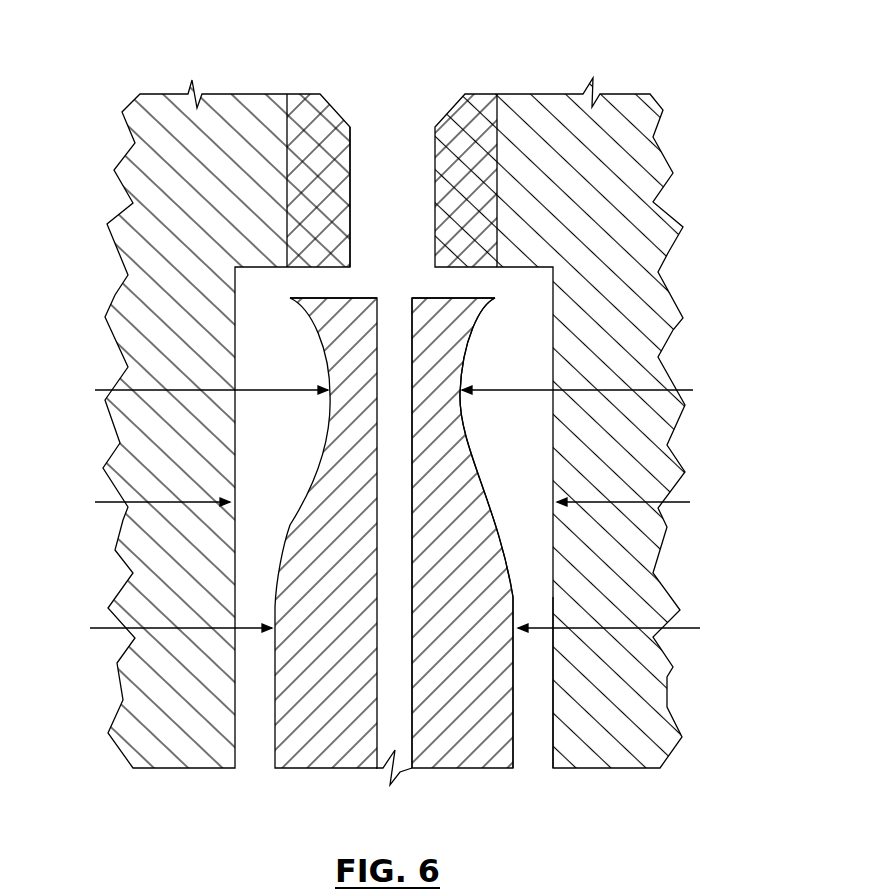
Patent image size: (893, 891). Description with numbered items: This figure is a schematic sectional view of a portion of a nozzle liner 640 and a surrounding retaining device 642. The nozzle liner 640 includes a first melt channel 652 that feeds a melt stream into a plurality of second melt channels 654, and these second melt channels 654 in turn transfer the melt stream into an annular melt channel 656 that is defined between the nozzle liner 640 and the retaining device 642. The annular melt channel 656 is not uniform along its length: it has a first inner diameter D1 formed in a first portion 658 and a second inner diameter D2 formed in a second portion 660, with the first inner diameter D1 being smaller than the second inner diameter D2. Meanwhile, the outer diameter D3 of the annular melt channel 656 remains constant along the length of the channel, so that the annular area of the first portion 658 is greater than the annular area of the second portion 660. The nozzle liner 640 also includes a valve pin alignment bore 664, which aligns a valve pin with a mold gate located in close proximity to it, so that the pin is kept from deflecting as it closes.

The nozzle liner 640 is at (313, 125).
The retaining device 642 is at (615, 747).
The first melt channel 652 is at (355, 180).
The second melt channels 654 is at (332, 282).
The annular melt channel 656 is at (527, 568).
The first portion of annular melt channel 658 is at (518, 469).
The second portion of annular melt channel 660 is at (532, 712).
The valve pin alignment bore 664 is at (407, 357).
The first inner diameter D1 is at (418, 393).
The second inner diameter D2 is at (417, 633).
The outer diameter D3 is at (418, 505).